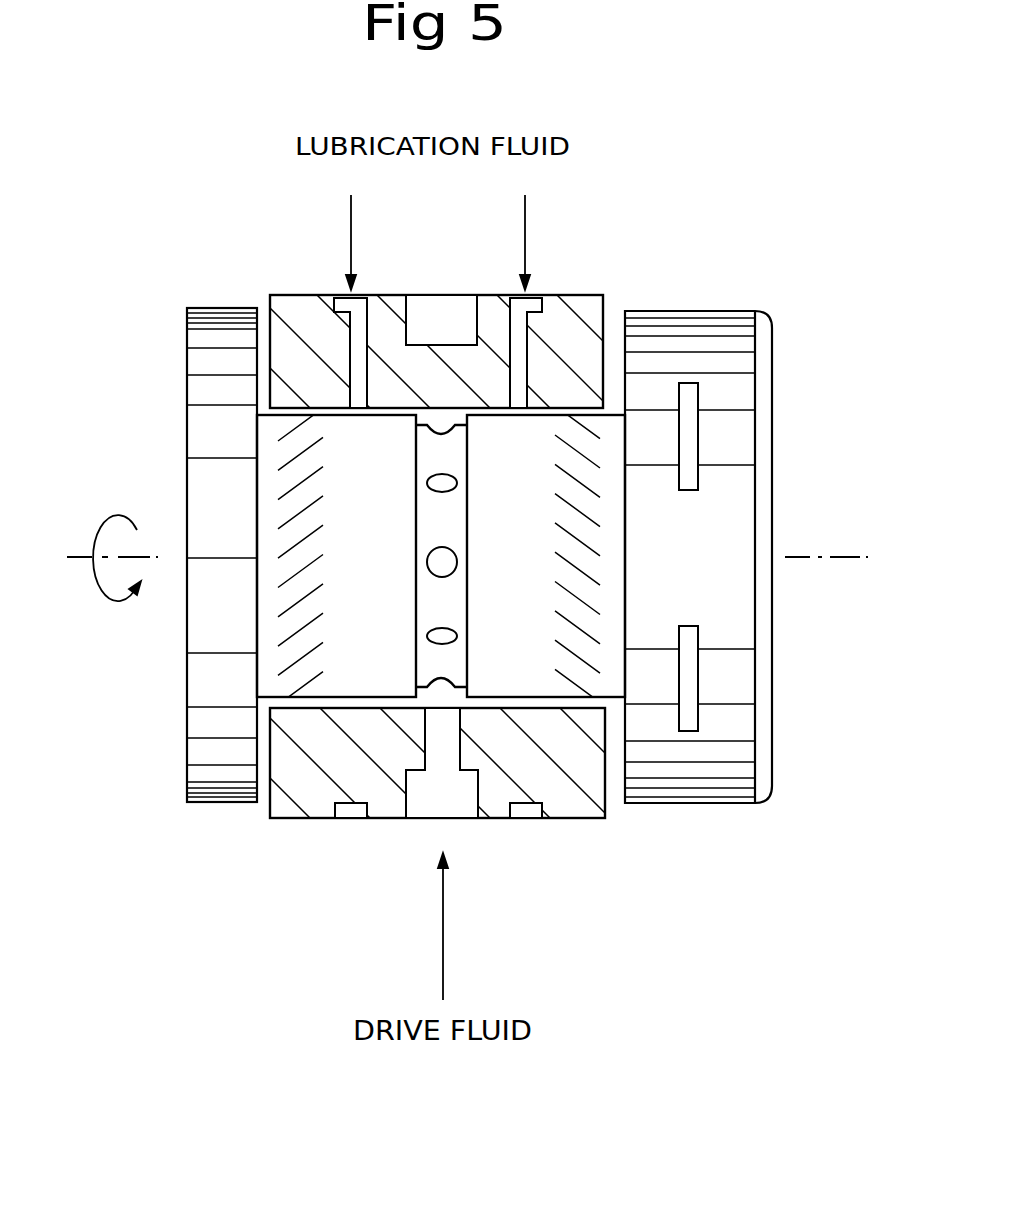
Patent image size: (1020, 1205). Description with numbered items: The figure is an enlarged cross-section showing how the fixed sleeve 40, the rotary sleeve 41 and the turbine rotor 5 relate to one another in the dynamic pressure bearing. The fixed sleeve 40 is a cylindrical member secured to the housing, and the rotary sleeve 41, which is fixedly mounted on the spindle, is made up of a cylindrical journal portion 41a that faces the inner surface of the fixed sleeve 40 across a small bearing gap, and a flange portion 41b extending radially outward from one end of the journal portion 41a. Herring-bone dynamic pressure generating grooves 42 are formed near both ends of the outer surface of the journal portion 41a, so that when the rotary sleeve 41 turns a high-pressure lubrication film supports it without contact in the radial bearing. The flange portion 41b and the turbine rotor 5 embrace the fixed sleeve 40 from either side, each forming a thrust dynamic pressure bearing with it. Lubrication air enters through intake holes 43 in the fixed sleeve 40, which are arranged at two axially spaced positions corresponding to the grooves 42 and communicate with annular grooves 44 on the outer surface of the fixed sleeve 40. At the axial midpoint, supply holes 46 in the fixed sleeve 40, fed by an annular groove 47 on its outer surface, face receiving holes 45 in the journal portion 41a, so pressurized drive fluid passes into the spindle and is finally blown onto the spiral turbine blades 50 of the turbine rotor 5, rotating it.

The turbine rotor 5 is at (740, 295).
The fixed sleeve 40 is at (583, 296).
The rotary sleeve 41 is at (365, 621).
The journal portion 41a is at (518, 677).
The flange portion 41b is at (203, 718).
The dynamic pressure generating grooves 42 is at (287, 522).
The intake holes 43 is at (352, 340).
The annular grooves 44 is at (352, 813).
The receiving holes 45 is at (448, 481).
The supply holes 46 is at (430, 730).
The annular groove 47 is at (434, 305).
The turbine blades 50 is at (690, 428).